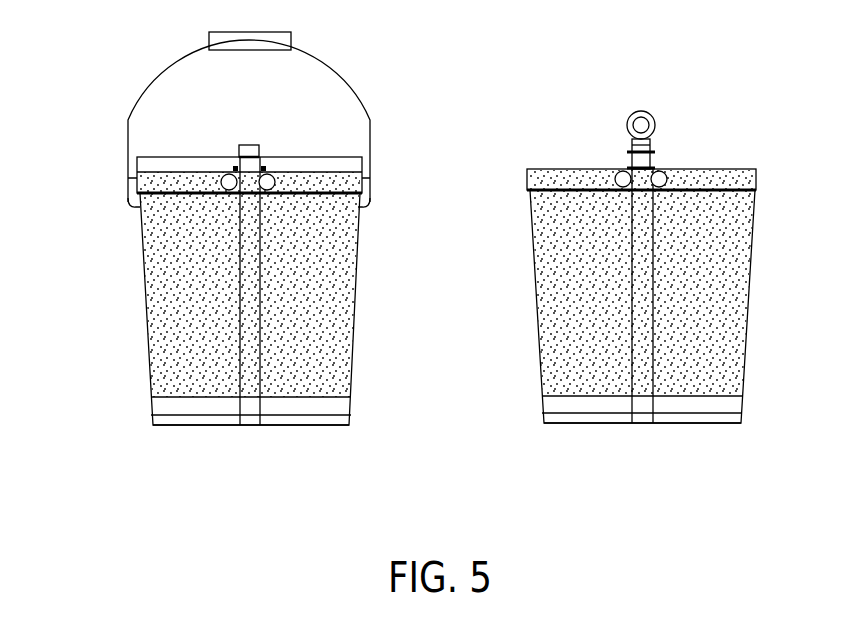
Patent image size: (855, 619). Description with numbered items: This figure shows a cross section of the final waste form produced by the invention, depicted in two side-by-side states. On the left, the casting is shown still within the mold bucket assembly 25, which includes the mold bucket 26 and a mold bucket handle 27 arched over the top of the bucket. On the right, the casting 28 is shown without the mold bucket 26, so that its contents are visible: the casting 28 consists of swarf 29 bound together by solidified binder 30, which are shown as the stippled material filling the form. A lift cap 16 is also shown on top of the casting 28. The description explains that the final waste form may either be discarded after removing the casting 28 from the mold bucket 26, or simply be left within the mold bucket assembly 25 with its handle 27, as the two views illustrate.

The lift cap 16 is at (654, 113).
The mold bucket assembly 25 is at (165, 430).
The mold bucket 26 is at (150, 275).
The mold bucket handle 27 is at (128, 122).
The casting 28 is at (712, 425).
The swarf 29 is at (749, 283).
The solidified binder 30 is at (743, 235).